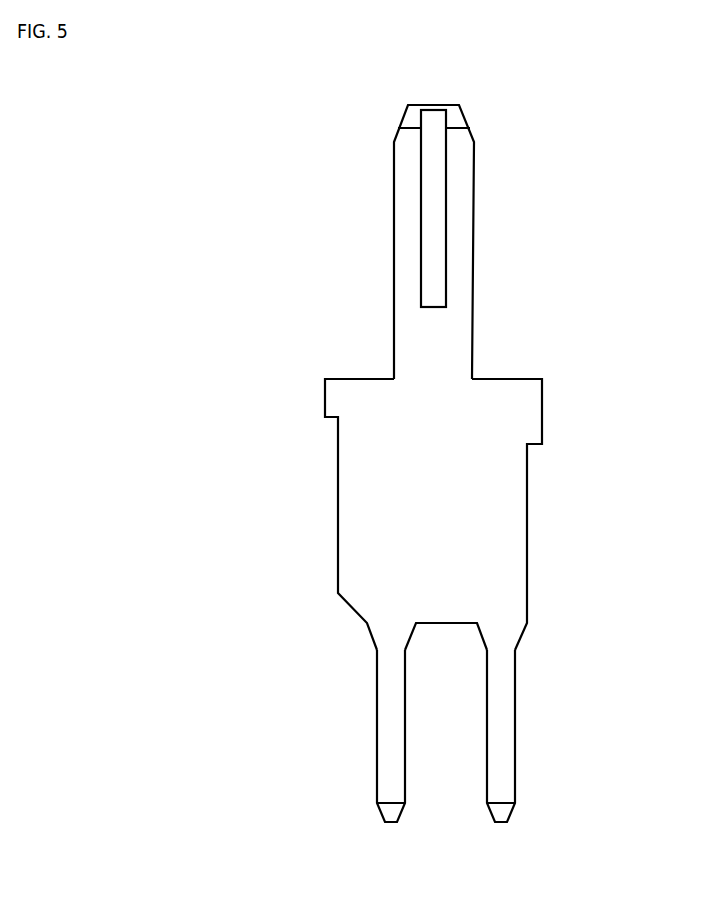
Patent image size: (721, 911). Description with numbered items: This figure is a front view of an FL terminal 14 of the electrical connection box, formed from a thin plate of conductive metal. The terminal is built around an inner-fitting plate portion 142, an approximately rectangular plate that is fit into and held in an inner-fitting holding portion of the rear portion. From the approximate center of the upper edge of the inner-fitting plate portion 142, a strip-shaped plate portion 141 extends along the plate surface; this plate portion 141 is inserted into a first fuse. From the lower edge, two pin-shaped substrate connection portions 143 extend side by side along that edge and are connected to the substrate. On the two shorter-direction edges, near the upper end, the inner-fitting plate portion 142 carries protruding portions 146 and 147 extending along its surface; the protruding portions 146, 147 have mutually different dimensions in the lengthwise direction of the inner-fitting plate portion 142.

The FL terminal 14 is at (268, 119).
The plate portion 141 is at (397, 232).
The inner-fitting plate portion 142 is at (353, 543).
The substrate connection portions 143 is at (383, 818).
The protruding portion 146 is at (327, 402).
The protruding portion 147 is at (533, 410).